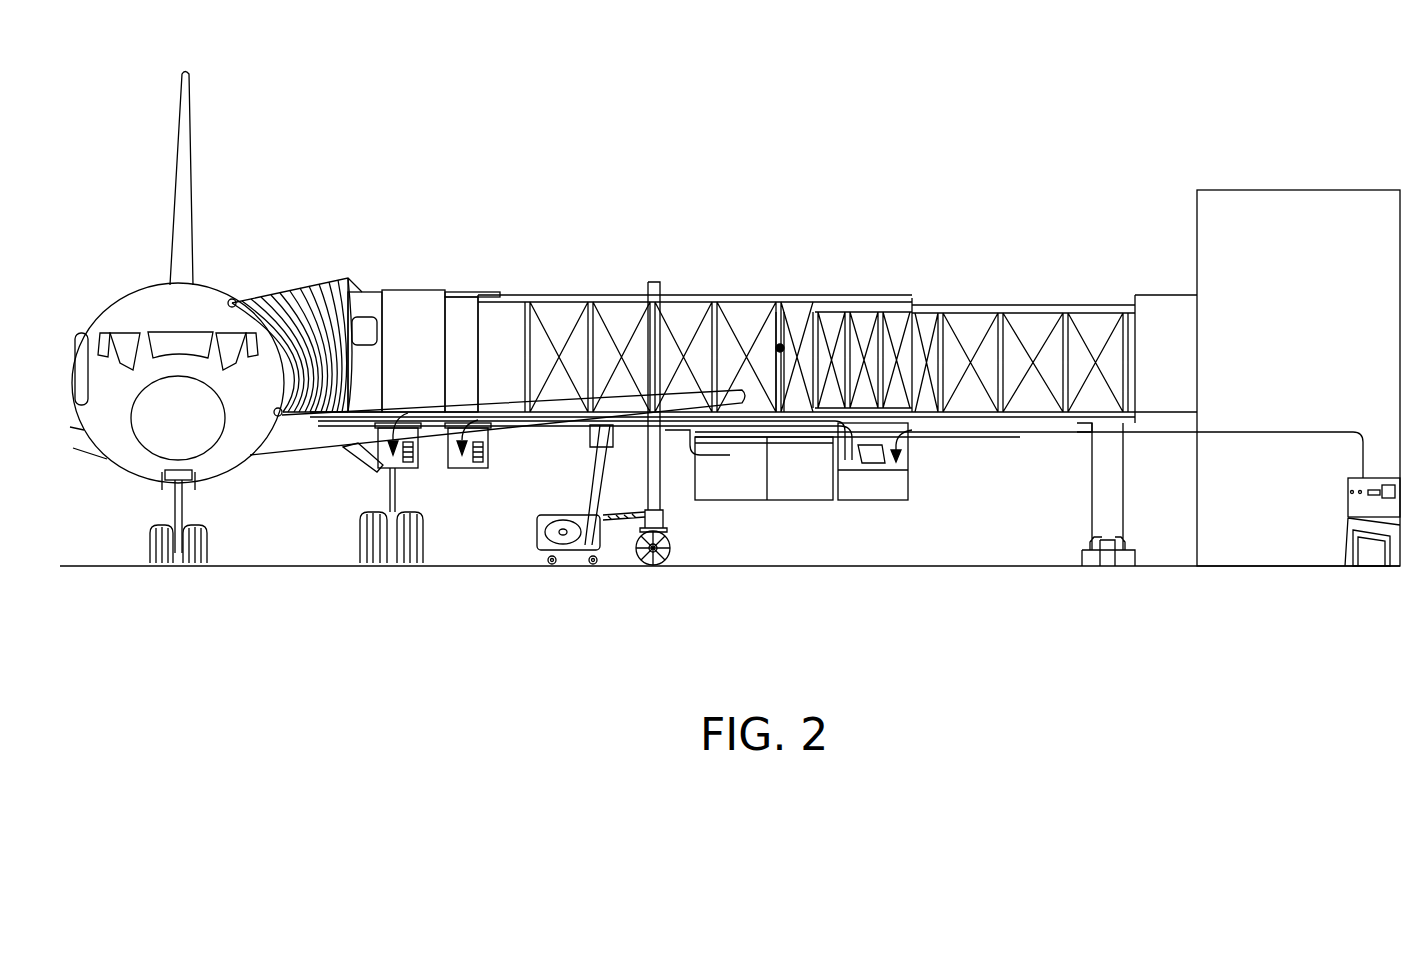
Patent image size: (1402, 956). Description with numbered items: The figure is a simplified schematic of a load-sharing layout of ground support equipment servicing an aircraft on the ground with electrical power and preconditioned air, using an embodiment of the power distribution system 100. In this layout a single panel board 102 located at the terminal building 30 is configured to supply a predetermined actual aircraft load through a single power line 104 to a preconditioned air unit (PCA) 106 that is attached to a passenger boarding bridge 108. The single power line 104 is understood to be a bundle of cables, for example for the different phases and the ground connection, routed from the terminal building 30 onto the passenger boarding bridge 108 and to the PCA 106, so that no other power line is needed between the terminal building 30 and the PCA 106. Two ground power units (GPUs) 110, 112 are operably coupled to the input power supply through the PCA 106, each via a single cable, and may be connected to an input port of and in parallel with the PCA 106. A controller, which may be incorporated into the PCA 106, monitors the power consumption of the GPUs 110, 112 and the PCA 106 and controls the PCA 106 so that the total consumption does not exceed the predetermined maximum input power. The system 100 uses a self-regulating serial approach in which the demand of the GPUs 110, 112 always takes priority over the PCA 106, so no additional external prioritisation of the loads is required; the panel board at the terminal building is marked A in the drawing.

The power distribution system 100 is at (905, 168).
The terminal building 30 is at (1212, 200).
The panel board 102 is at (1365, 543).
The power line 104 is at (1023, 437).
The preconditioned air unit (PCA) 106 is at (847, 487).
The passenger boarding bridge 108 is at (780, 344).
The ground power unit (GPU) 110 is at (412, 460).
The ground power unit (GPU) 112 is at (484, 460).
The control panel A is at (1374, 483).